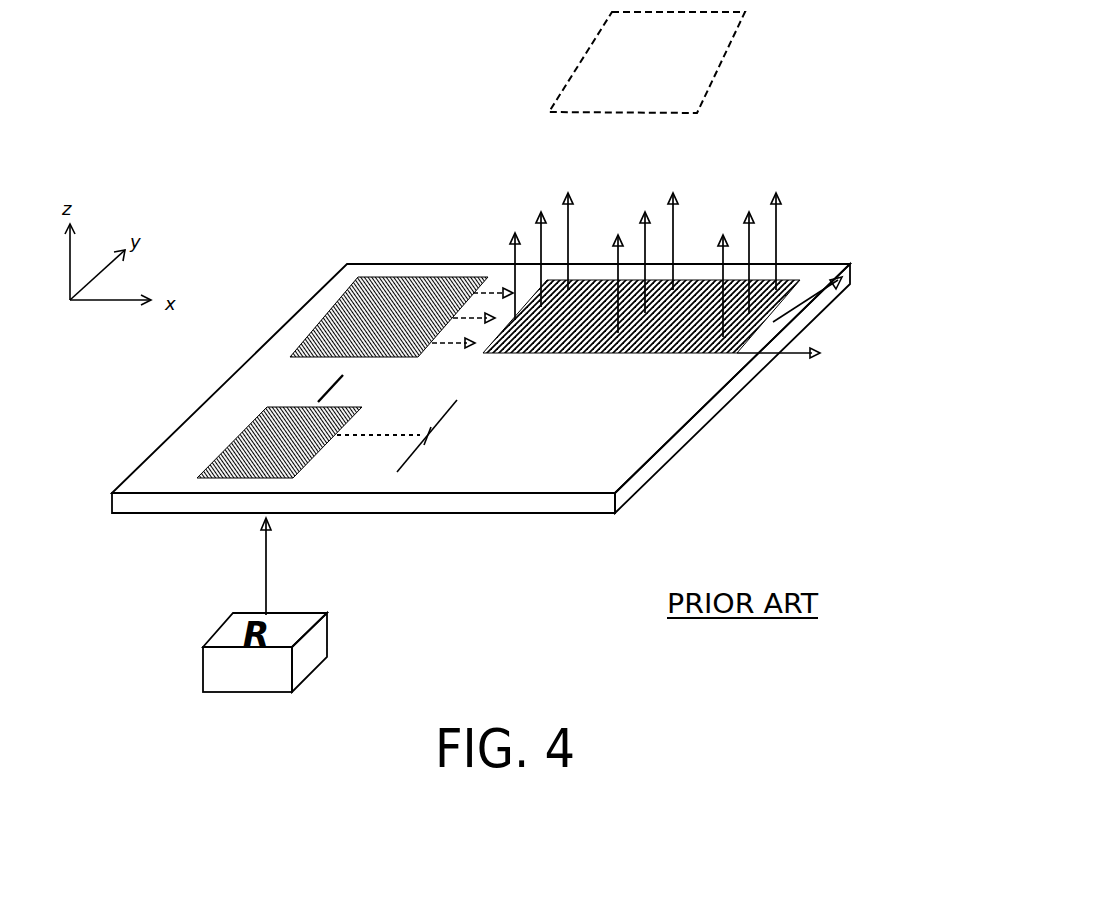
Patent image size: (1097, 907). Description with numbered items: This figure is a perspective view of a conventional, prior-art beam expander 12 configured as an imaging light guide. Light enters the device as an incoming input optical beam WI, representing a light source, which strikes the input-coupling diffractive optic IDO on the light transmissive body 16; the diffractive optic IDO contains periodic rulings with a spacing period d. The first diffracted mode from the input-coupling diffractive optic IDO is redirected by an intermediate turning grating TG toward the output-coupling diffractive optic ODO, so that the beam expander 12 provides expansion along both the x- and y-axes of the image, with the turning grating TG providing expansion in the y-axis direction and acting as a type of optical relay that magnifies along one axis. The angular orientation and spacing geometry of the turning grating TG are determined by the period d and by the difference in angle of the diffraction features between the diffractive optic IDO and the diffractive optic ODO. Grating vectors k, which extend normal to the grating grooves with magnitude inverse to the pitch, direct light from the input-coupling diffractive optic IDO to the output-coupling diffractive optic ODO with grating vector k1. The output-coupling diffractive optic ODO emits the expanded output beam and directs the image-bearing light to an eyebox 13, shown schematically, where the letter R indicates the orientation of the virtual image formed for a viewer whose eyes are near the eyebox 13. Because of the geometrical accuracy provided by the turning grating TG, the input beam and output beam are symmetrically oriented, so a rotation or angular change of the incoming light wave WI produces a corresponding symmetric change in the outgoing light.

The beam expander 12 is at (740, 423).
The eyebox 13 is at (720, 55).
The light transmissive body 16 is at (527, 503).
The turning grating TG is at (358, 287).
The output-coupling diffractive optic ODO is at (770, 330).
The input-coupling diffractive optic IDO is at (237, 432).
The input optical beam WI is at (262, 580).
The grating vector k is at (326, 390).
The grating vector k1 is at (845, 272).
The period d is at (398, 436).